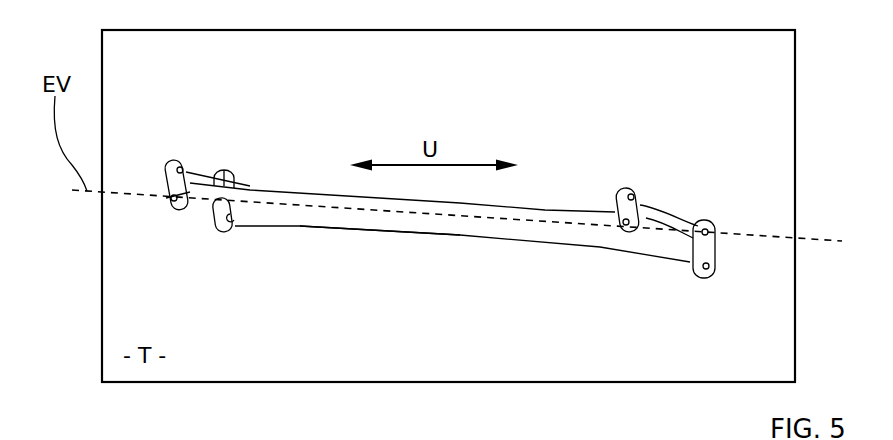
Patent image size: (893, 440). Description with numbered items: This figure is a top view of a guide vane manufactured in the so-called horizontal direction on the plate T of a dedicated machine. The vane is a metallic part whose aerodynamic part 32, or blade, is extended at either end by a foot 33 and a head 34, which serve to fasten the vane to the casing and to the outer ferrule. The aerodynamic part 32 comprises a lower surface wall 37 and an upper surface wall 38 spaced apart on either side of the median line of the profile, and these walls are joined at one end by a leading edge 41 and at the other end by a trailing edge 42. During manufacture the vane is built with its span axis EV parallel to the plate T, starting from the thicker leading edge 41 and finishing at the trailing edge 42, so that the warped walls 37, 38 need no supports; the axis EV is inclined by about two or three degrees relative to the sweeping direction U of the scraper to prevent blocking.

The aerodynamic part 32 is at (438, 244).
The foot 33 is at (160, 168).
The head 34 is at (727, 268).
The lower surface wall 37 is at (403, 230).
The upper surface wall 38 is at (659, 210).
The leading edge 41 is at (606, 250).
The trailing edge 42 is at (543, 213).